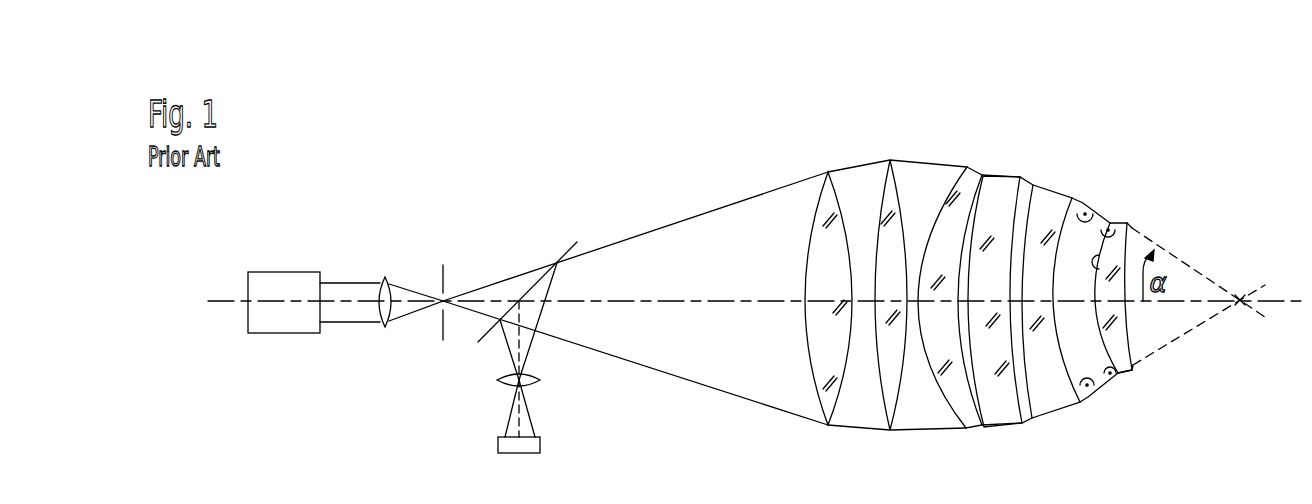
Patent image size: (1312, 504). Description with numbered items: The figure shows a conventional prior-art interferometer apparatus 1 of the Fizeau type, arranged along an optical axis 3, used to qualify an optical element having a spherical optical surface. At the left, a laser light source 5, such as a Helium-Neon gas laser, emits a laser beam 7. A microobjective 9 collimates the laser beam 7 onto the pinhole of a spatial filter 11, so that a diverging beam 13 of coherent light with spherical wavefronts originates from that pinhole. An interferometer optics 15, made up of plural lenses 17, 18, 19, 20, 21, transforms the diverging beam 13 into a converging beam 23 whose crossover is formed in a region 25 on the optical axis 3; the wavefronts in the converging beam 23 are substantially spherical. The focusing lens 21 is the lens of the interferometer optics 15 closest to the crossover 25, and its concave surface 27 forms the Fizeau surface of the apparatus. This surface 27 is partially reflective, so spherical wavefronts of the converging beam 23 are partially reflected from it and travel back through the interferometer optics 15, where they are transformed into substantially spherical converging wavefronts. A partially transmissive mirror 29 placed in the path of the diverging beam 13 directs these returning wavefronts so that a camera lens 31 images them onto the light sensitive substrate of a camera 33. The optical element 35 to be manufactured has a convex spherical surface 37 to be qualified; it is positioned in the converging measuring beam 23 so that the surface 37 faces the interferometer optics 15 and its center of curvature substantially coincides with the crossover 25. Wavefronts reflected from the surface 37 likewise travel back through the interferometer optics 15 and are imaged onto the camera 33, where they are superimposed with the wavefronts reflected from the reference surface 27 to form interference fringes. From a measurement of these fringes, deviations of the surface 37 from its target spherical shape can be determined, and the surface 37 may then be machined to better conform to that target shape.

The interferometer apparatus 1 is at (609, 166).
The optical axis 3 is at (227, 303).
The laser light source 5 is at (283, 272).
The laser beam 7 is at (352, 322).
The microobjective 9 is at (385, 277).
The spatial filter 11 is at (446, 279).
The diverging beam 13 is at (663, 232).
The interferometer optics 15 is at (946, 135).
The lens 17 is at (830, 432).
The lens 18 is at (890, 432).
The lens 19 is at (975, 435).
The lens 20 is at (1025, 427).
The focusing lens 21 is at (1085, 405).
The converging beam 23 is at (1108, 380).
The crossover region 25 is at (1240, 298).
The concave surface 27 is at (1097, 240).
The partially transmissive mirror 29 is at (563, 250).
The camera lens 31 is at (540, 380).
The camera 33 is at (540, 443).
The optical element 35 is at (1134, 373).
The convex spherical surface 37 is at (1093, 262).